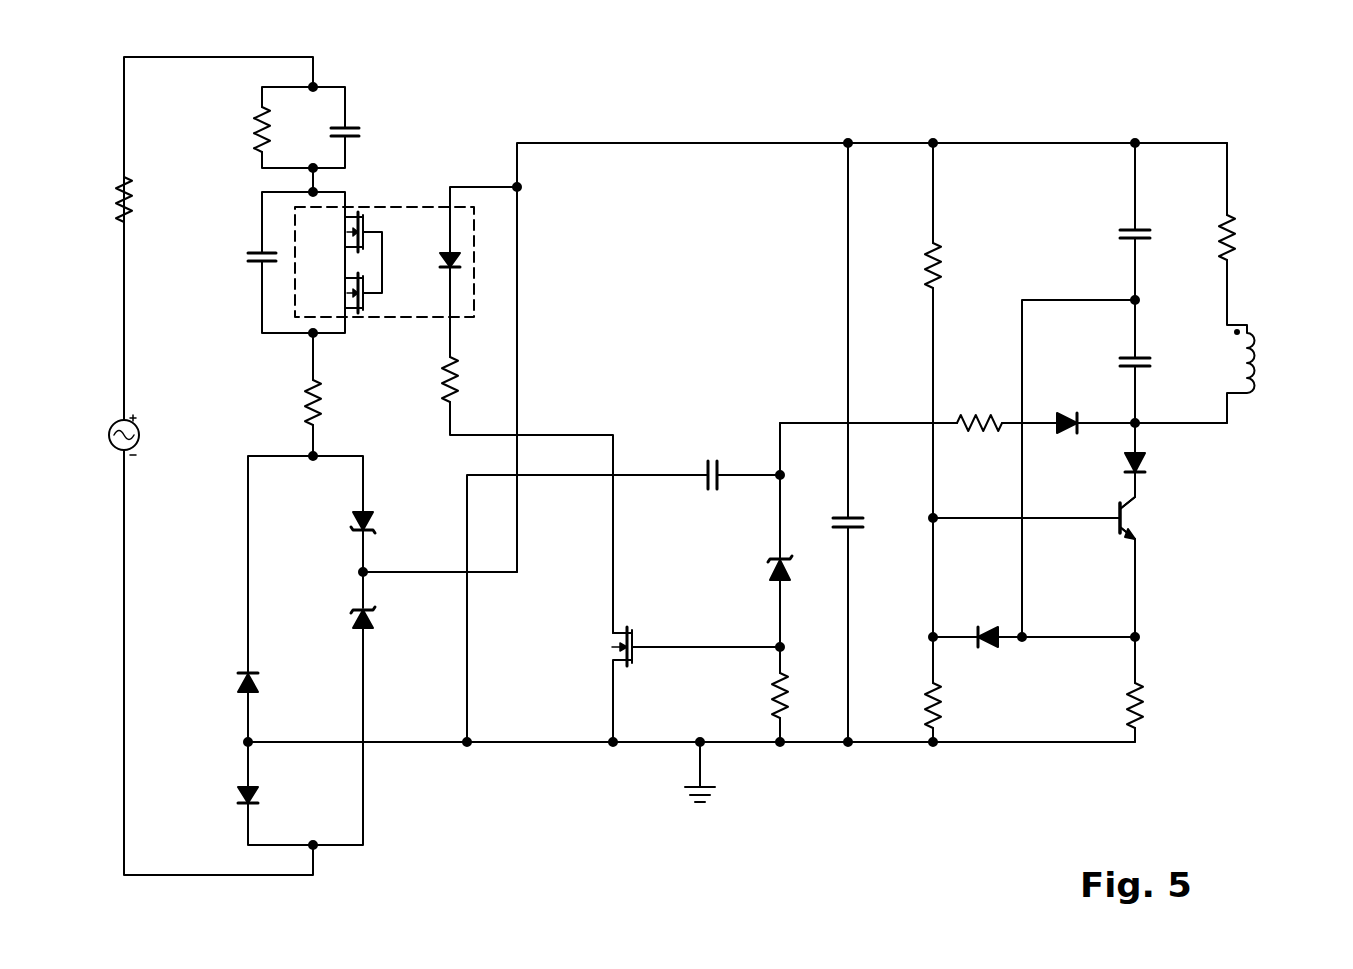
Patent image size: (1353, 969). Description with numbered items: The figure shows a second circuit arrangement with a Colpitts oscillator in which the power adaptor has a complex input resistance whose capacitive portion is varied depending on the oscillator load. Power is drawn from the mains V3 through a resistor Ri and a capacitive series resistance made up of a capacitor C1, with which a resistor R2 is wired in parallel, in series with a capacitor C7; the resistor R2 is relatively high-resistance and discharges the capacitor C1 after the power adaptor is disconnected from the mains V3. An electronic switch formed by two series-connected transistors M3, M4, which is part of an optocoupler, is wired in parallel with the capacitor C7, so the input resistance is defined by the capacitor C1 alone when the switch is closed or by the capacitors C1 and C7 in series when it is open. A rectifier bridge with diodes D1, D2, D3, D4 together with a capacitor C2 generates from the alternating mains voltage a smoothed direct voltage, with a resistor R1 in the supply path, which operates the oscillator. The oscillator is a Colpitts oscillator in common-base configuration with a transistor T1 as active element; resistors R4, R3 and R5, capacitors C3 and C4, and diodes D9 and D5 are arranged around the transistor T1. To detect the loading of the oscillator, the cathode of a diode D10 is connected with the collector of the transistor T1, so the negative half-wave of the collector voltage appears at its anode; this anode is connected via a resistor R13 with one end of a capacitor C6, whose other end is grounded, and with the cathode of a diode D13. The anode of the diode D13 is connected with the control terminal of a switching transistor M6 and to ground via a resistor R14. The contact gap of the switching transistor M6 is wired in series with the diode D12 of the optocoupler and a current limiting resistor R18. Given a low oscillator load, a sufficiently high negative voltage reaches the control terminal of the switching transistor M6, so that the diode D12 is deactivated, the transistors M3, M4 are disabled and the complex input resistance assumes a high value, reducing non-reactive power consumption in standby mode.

The source internal resistor Ri is at (142, 199).
The mains V3 is at (108, 421).
The resistor R2 is at (242, 130).
The capacitor C1 is at (362, 128).
The capacitor C7 is at (245, 250).
The transistor M3 is at (342, 252).
The transistor M4 is at (333, 293).
The diode of the optocoupler D12 is at (430, 241).
The current limiting resistor R18 is at (424, 379).
The resistor R1 is at (296, 403).
The diode D1 is at (344, 521).
The diode D2 is at (344, 616).
The diode D3 is at (229, 685).
The diode D4 is at (229, 796).
The capacitor C6 is at (713, 493).
The diode D13 is at (752, 570).
The switching transistor M6 is at (601, 684).
The resistor R14 is at (753, 696).
The capacitor C2 is at (865, 540).
The resistor R4 is at (953, 267).
The capacitor C3 is at (1118, 233).
The capacitor C4 is at (1118, 363).
The resistor R13 is at (979, 445).
The diode D10 is at (1067, 444).
The diode D9 is at (1155, 461).
The transistor T1 is at (1145, 517).
The diode D5 is at (991, 657).
The resistor R3 is at (914, 705).
The resistor R5 is at (1156, 705).